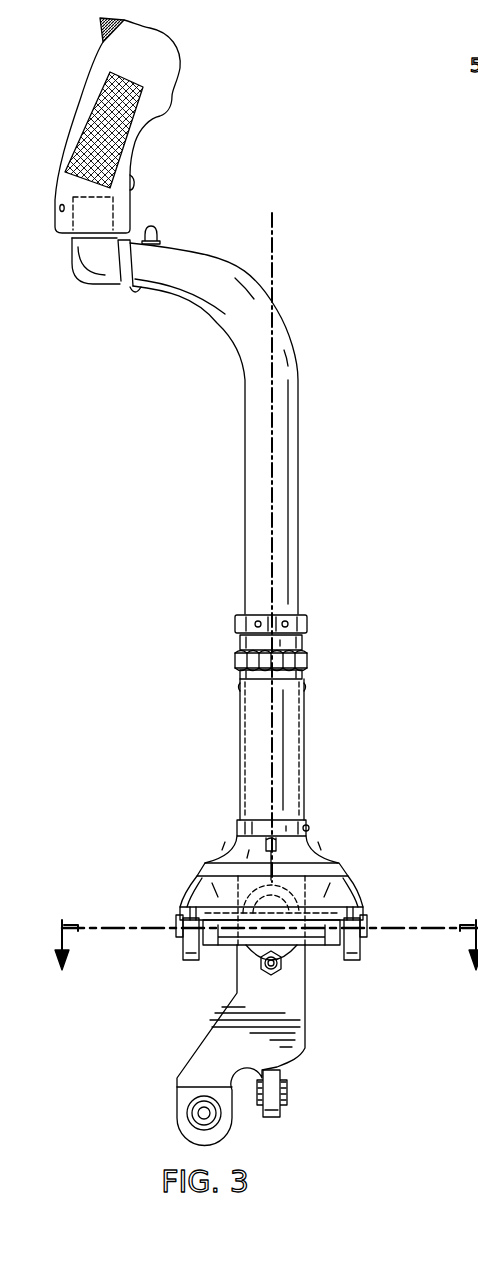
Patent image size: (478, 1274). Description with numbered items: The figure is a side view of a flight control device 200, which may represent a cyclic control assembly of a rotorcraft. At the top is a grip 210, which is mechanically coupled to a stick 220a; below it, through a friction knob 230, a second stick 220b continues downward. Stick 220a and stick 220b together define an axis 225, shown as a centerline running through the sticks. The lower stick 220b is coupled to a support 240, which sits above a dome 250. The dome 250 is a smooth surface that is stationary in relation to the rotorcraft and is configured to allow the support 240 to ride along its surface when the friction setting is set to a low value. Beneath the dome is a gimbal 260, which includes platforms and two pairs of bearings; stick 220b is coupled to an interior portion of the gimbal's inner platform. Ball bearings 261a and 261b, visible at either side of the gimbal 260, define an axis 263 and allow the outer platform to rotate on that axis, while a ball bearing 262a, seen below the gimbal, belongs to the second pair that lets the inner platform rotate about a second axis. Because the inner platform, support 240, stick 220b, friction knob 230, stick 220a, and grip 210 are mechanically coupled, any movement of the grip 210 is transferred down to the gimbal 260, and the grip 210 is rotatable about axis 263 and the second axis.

The flight control device 200 is at (268, 90).
The grip 210 is at (92, 84).
The stick 220a is at (245, 445).
The stick 220b is at (241, 734).
The axis 225 is at (273, 226).
The friction knob 230 is at (310, 642).
The support 240 is at (311, 835).
The dome 250 is at (362, 888).
The gimbal 260 is at (222, 947).
The ball bearing 261a is at (180, 948).
The ball bearing 261b is at (364, 948).
The ball bearing 262a is at (286, 956).
The axis 263 is at (117, 925).